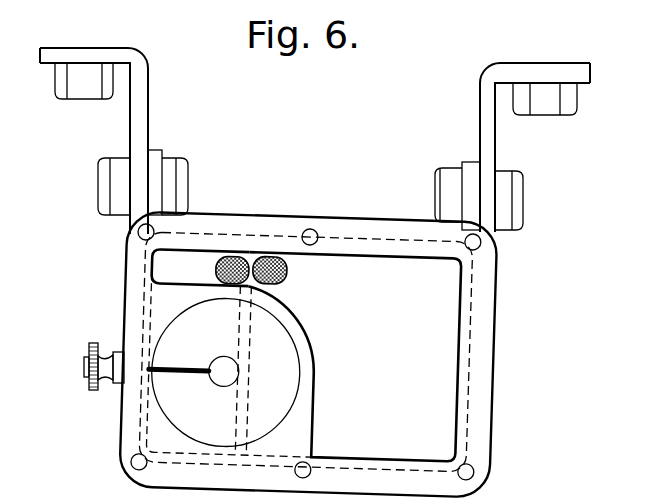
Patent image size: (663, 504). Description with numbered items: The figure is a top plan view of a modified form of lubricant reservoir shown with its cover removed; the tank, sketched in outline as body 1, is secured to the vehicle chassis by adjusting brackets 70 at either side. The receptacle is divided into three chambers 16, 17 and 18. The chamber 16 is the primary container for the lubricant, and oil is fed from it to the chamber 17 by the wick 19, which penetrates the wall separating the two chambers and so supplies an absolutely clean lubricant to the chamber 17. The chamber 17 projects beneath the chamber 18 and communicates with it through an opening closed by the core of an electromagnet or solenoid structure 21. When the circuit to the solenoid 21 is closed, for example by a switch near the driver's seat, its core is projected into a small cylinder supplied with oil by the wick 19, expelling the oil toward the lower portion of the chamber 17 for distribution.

The mounting plate 1 is at (448, 310).
The chamber 16 is at (385, 283).
The chamber 17 is at (198, 255).
The chamber 18 is at (160, 390).
The wick 19 is at (273, 256).
The electromagnet or solenoid structure 21 is at (282, 352).
The adjusting brackets 70 is at (463, 197).